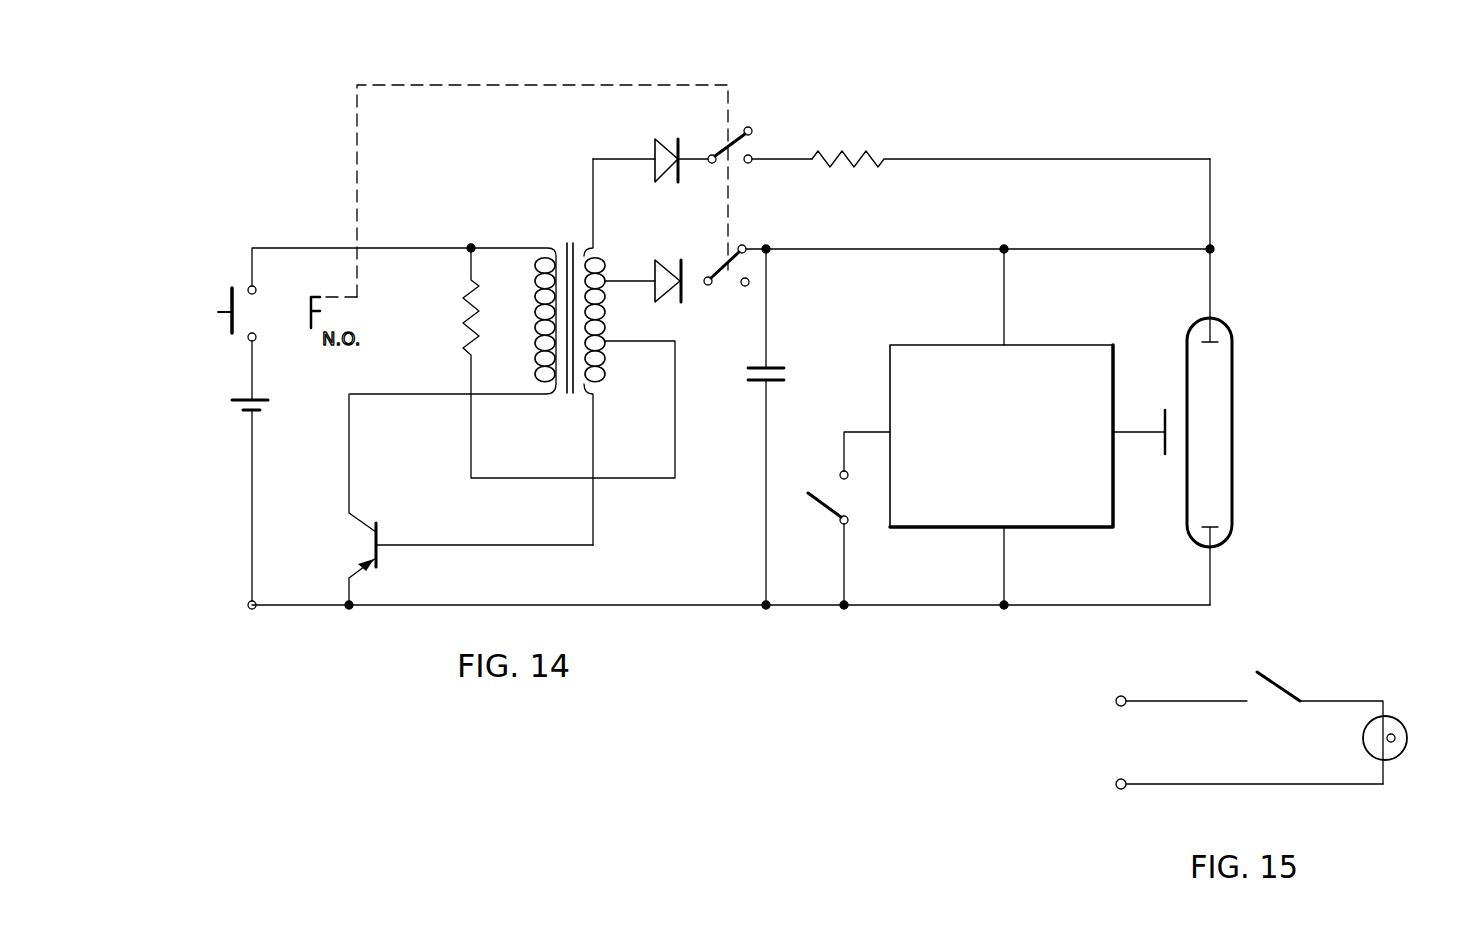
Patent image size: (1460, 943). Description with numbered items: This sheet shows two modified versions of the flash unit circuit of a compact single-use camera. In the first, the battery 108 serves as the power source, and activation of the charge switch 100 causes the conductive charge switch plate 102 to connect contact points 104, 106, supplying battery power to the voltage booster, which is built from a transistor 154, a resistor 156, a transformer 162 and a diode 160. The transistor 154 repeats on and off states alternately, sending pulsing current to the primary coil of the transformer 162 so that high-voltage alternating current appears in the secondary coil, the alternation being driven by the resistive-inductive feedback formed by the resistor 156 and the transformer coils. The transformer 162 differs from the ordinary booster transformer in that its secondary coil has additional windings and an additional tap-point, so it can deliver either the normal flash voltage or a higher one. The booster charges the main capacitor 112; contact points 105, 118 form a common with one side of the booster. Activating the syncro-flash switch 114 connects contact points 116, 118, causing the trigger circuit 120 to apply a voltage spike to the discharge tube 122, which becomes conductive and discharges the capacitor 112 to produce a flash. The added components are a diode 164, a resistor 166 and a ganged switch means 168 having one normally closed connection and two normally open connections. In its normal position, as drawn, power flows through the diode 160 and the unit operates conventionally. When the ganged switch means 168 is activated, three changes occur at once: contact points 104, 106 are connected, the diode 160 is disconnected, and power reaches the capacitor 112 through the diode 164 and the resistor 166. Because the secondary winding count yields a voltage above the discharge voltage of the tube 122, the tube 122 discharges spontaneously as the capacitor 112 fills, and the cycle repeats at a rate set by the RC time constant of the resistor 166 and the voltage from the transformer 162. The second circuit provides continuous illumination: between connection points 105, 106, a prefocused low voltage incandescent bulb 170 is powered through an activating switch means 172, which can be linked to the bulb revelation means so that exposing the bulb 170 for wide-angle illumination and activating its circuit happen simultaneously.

In FIG. 14, the charge switch 100 is at (218, 290).
In FIG. 14, the charge switch plate 102 is at (228, 328).
In FIG. 14, the contact point 104 is at (257, 288).
In FIG. 14, the contact point 105 is at (248, 610).
In FIG. 15, the contact point 105 is at (1127, 699).
In FIG. 14, the contact point 106 is at (257, 338).
In FIG. 15, the contact point 106 is at (1127, 782).
In FIG. 14, the battery 108 is at (240, 409).
In FIG. 14, the main capacitor 112 is at (783, 373).
In FIG. 14, the syncro-flash switch 114 is at (826, 508).
In FIG. 14, the contact point 116 is at (840, 472).
In FIG. 14, the contact point 118 is at (840, 525).
In FIG. 14, the trigger circuit 120 is at (1090, 528).
In FIG. 14, the discharge tube 122 is at (1232, 434).
In FIG. 14, the transistor 154 is at (378, 530).
In FIG. 14, the resistor 156 is at (462, 316).
In FIG. 14, the diode 160 is at (667, 253).
In FIG. 14, the transformer 162 is at (558, 246).
In FIG. 14, the diode 164 is at (668, 138).
In FIG. 14, the resistor 166 is at (852, 150).
In FIG. 14, the ganged switch means 168 is at (752, 108).
In FIG. 15, the incandescent bulb 170 is at (1398, 716).
In FIG. 15, the activating switch means 172 is at (1299, 676).